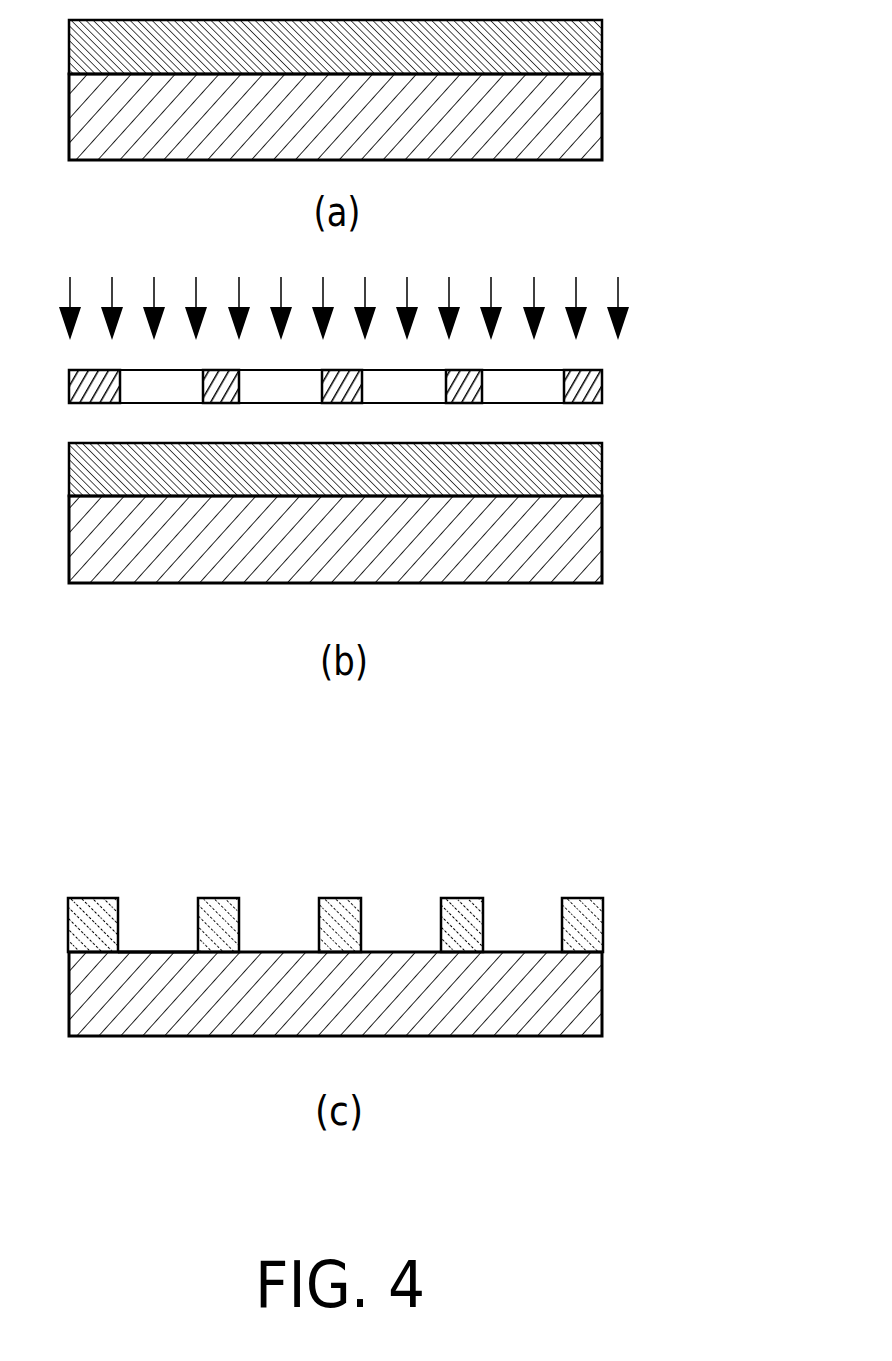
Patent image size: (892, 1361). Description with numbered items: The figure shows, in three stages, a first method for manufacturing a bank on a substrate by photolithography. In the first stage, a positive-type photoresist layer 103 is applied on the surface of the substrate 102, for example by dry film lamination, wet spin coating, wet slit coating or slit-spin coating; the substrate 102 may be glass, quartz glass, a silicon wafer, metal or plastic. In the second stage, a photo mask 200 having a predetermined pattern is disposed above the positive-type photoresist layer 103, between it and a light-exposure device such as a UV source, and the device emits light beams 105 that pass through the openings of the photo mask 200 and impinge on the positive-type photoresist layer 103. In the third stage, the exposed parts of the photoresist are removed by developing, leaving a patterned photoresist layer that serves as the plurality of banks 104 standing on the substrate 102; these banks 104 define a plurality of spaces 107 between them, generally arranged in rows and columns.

The substrate 102 is at (573, 122).
The positive-type photoresist layer 103 is at (573, 50).
The light beams 105 is at (618, 293).
The photo mask 200 is at (600, 375).
The banks 104 is at (578, 930).
The spaces 107 is at (158, 915).